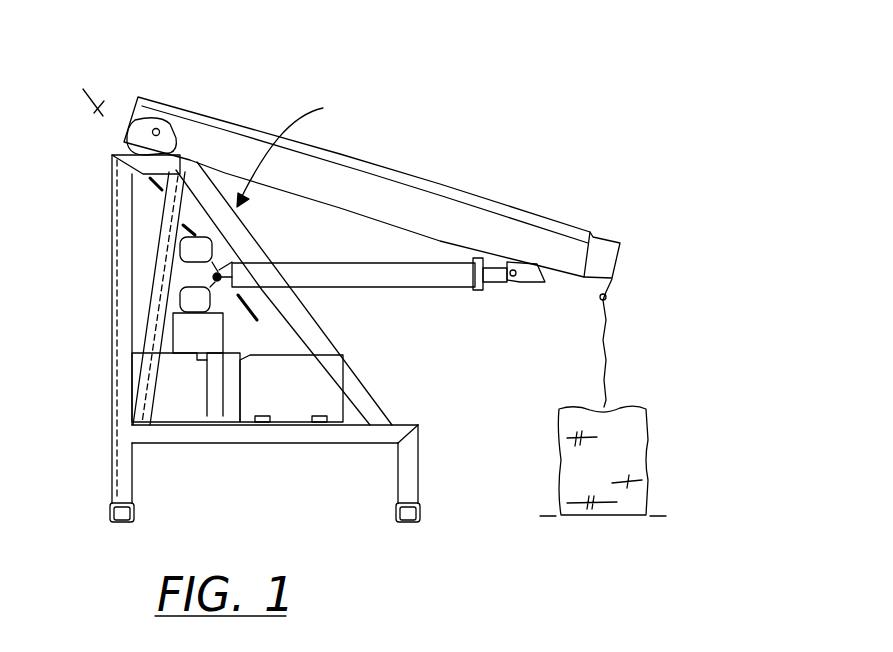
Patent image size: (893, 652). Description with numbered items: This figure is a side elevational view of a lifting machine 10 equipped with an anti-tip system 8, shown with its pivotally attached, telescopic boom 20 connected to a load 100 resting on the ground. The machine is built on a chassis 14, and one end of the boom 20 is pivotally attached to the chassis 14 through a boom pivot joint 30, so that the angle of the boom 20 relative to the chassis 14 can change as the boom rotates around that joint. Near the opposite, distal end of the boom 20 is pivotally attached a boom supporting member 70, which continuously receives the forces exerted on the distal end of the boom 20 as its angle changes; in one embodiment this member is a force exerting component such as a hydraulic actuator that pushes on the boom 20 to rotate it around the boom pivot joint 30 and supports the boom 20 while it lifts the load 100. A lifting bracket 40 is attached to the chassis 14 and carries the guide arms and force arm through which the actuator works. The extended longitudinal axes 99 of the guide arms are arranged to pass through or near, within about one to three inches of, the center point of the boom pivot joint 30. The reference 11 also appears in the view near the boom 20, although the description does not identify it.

The anti-tip system 8 is at (143, 283).
The lifting machine 10 is at (145, 68).
The tilt direction arrow 11 is at (302, 148).
The chassis 14 is at (112, 253).
The boom 20 is at (462, 186).
The boom pivot joint 30 is at (147, 165).
The lifting bracket 40 is at (226, 244).
The boom supporting member 70 is at (405, 292).
The extended longitudinal axes 99 is at (76, 115).
The load 100 is at (657, 409).